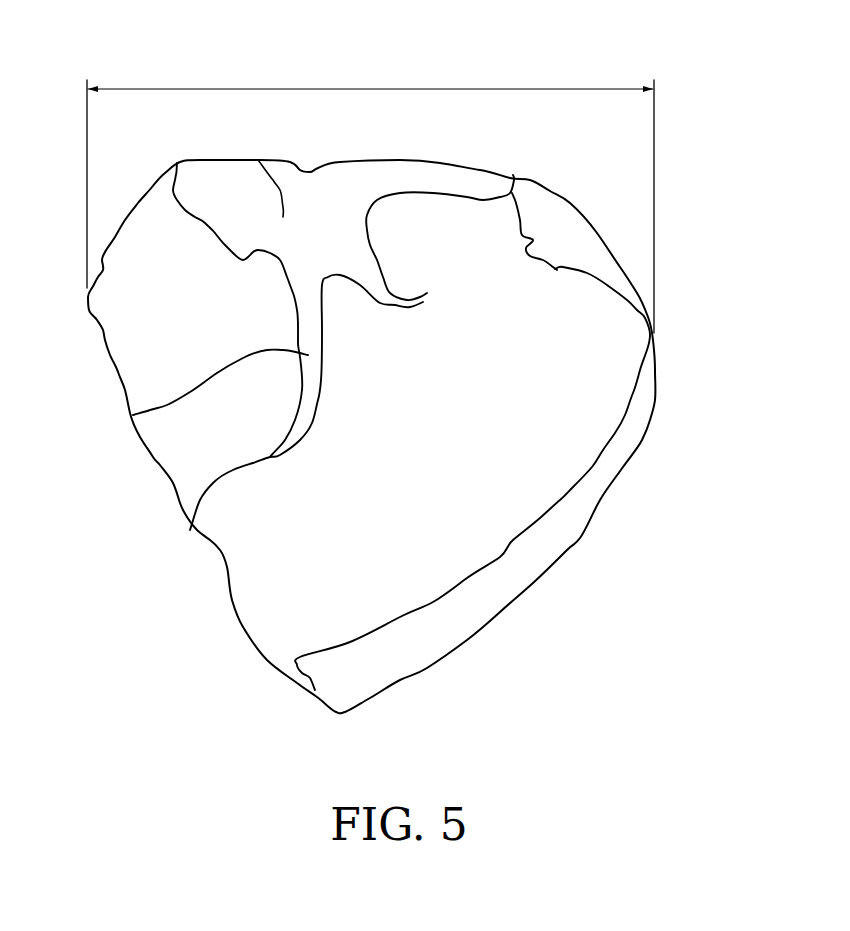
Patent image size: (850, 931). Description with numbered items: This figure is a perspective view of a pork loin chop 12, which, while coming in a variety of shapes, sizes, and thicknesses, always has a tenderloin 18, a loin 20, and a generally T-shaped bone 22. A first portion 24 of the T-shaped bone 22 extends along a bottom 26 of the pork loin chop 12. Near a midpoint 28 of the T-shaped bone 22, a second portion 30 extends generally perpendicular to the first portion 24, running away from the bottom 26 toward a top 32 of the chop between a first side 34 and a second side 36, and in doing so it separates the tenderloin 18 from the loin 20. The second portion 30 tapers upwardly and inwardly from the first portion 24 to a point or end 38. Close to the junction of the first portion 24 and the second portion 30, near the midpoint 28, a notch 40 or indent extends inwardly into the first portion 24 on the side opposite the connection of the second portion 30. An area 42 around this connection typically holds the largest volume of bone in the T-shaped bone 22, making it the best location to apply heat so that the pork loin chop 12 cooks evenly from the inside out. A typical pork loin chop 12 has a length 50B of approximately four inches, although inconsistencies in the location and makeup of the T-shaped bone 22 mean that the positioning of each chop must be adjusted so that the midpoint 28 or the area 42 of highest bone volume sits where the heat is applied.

The pork loin chop 12 is at (430, 428).
The tenderloin 18 is at (150, 343).
The loin 20 is at (530, 480).
The T-shaped bone 22 is at (405, 140).
The first portion 24 is at (470, 182).
The bottom 26 is at (540, 186).
The midpoint 28 is at (305, 168).
The second portion 30 is at (133, 415).
The top 32 is at (338, 713).
The first side 34 is at (396, 504).
The second side 36 is at (425, 670).
The end 38 is at (190, 530).
The notch 40 is at (318, 167).
The area 42 is at (258, 160).
The length 50B is at (372, 88).